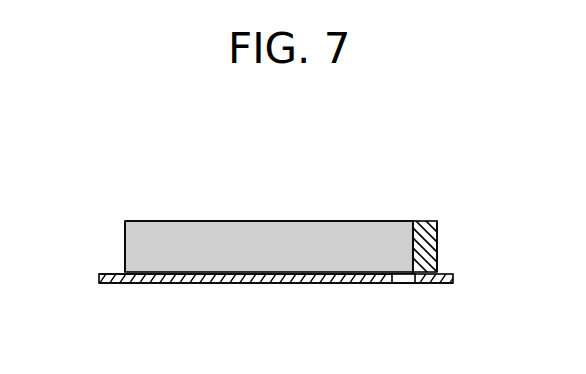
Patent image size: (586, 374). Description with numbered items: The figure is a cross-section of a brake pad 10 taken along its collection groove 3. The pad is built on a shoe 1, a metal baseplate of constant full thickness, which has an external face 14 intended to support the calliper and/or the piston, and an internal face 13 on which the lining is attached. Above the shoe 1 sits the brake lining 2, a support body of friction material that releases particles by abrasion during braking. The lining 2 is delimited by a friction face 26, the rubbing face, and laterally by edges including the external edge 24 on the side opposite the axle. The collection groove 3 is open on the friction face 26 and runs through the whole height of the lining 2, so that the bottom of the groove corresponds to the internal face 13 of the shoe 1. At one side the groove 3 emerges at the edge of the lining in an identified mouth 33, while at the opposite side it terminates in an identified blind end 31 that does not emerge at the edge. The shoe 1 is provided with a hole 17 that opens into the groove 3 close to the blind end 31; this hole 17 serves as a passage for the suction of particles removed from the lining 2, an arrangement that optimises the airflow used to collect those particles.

The semiconductor device 10 is at (143, 168).
The brake lining 2 is at (268, 203).
The collection groove 3 is at (323, 235).
The friction face 26 is at (227, 221).
The mouth 33 is at (125, 243).
The blind end 31 is at (410, 221).
The external edge 24 is at (438, 250).
The shoe 1 is at (288, 283).
The hole 17 is at (405, 283).
The external face 14 is at (205, 285).
The internal face 13 is at (243, 285).